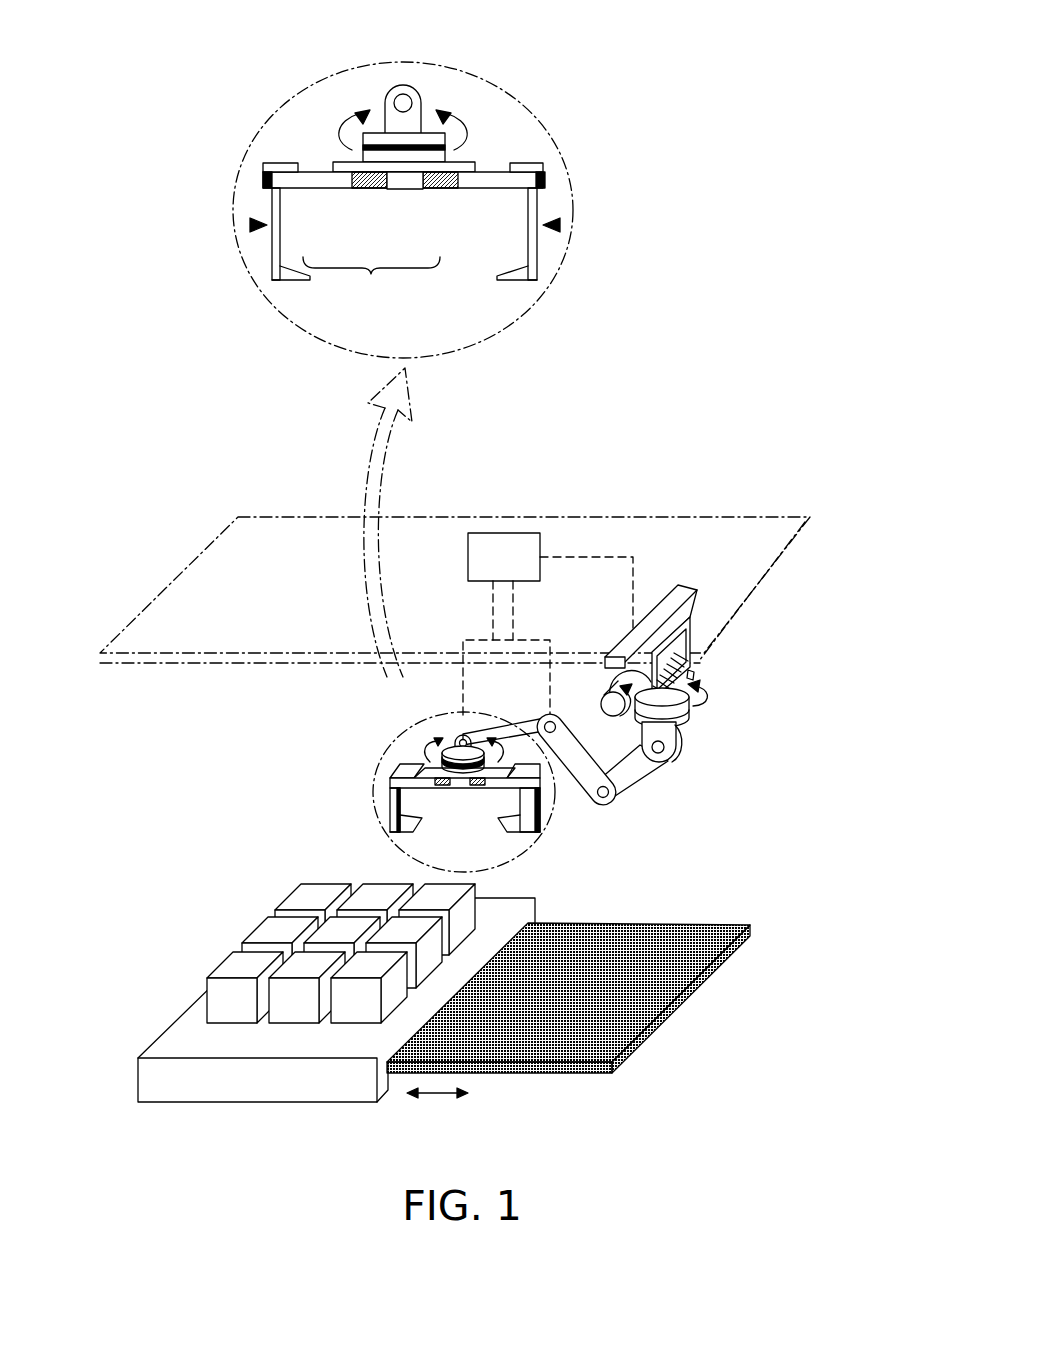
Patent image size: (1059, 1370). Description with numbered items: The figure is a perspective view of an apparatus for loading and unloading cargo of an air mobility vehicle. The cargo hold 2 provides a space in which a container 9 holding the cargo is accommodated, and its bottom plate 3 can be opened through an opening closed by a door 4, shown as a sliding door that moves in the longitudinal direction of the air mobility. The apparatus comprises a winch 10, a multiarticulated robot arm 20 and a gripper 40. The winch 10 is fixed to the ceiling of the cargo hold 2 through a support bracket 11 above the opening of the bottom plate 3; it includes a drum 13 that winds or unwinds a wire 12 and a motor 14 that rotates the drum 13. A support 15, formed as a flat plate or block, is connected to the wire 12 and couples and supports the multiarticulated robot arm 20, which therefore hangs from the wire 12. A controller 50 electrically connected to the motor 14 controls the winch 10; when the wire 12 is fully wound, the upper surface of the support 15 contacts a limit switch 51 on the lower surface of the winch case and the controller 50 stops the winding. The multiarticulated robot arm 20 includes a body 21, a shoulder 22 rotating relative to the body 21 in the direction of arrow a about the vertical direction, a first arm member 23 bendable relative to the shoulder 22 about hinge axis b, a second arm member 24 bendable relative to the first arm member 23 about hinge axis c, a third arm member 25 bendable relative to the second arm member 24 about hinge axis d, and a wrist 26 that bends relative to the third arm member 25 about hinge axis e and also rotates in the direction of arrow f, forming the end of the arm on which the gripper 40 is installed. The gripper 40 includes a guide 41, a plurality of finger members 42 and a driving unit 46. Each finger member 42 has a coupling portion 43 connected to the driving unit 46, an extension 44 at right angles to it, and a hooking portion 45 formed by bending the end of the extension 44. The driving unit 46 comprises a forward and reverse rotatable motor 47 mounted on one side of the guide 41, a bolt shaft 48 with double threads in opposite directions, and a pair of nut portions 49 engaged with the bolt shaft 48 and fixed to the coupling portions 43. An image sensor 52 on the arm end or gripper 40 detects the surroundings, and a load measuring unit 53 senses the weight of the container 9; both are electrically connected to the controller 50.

The cargo hold 2 is at (259, 792).
The bottom plate 3 is at (349, 1043).
The door 4 is at (677, 1002).
The container 9 is at (230, 1013).
The winch 10 is at (700, 635).
The support bracket 11 is at (670, 600).
The wire 12 is at (692, 700).
The drum 13 is at (688, 650).
The motor 14 is at (603, 697).
The support 15 is at (684, 713).
The multiarticulated robot arm 20 is at (611, 772).
The body 21 is at (676, 727).
The shoulder 22 is at (664, 749).
The first arm member 23 is at (625, 772).
The second arm member 24 is at (583, 742).
The third arm member 25 is at (507, 733).
The wrist 26 is at (430, 136).
The gripper 40 is at (406, 753).
The guide 41 is at (477, 165).
The finger members 42 is at (250, 225).
The coupling portion 43 is at (543, 167).
The extension 44 is at (534, 243).
The hooking portion 45 is at (517, 278).
The driving unit 46 is at (371, 282).
The motor 47 is at (405, 190).
The bolt shaft 48 is at (367, 190).
The nut portions 49 is at (315, 190).
The controller 50 is at (548, 624).
The limit switch 51 is at (693, 677).
The image sensor 52 is at (546, 178).
The load measuring unit 53 is at (446, 152).
The arrow a is at (717, 686).
The point b is at (668, 753).
The point c is at (617, 796).
The point d is at (539, 724).
The point e is at (403, 98).
The arrow f is at (352, 150).